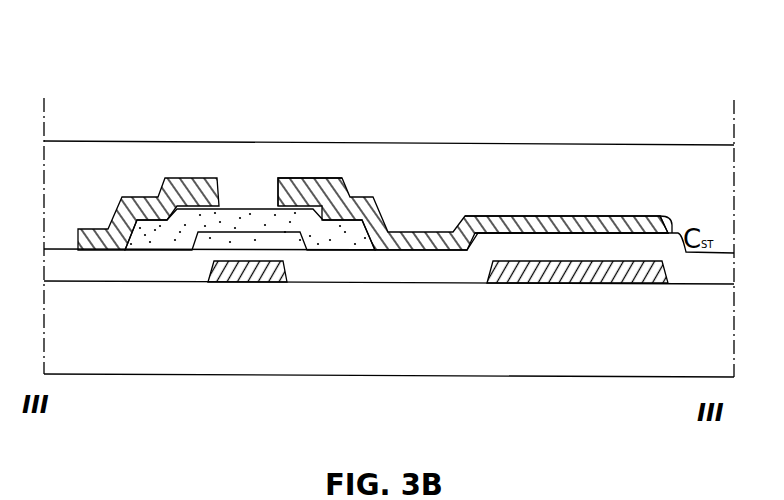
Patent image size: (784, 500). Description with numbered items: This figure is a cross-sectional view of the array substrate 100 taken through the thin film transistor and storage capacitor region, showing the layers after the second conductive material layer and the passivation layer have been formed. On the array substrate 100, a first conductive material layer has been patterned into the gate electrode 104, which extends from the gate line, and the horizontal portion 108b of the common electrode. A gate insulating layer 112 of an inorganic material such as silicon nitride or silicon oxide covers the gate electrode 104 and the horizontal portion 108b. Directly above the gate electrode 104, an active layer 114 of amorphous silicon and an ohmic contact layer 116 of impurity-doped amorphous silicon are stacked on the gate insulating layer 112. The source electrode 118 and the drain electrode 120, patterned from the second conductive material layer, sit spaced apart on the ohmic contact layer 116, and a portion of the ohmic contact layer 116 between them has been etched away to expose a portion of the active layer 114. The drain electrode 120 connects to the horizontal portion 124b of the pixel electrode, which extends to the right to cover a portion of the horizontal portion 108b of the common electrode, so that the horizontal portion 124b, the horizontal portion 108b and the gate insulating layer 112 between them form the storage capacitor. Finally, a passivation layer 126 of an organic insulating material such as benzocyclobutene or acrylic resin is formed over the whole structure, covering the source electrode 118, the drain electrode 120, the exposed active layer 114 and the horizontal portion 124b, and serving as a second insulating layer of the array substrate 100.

The array substrate 100 is at (482, 356).
The gate electrode 104 is at (250, 283).
The horizontal portion of the common electrode 108b is at (573, 285).
The gate insulating layer 112 is at (720, 245).
The active layer 114 is at (250, 209).
The ohmic contact layer 116 is at (299, 186).
The source electrode 118 is at (188, 178).
The drain electrode 120 is at (371, 197).
The horizontal portion of the pixel electrode 124b is at (540, 214).
The passivation layer 126 is at (457, 142).